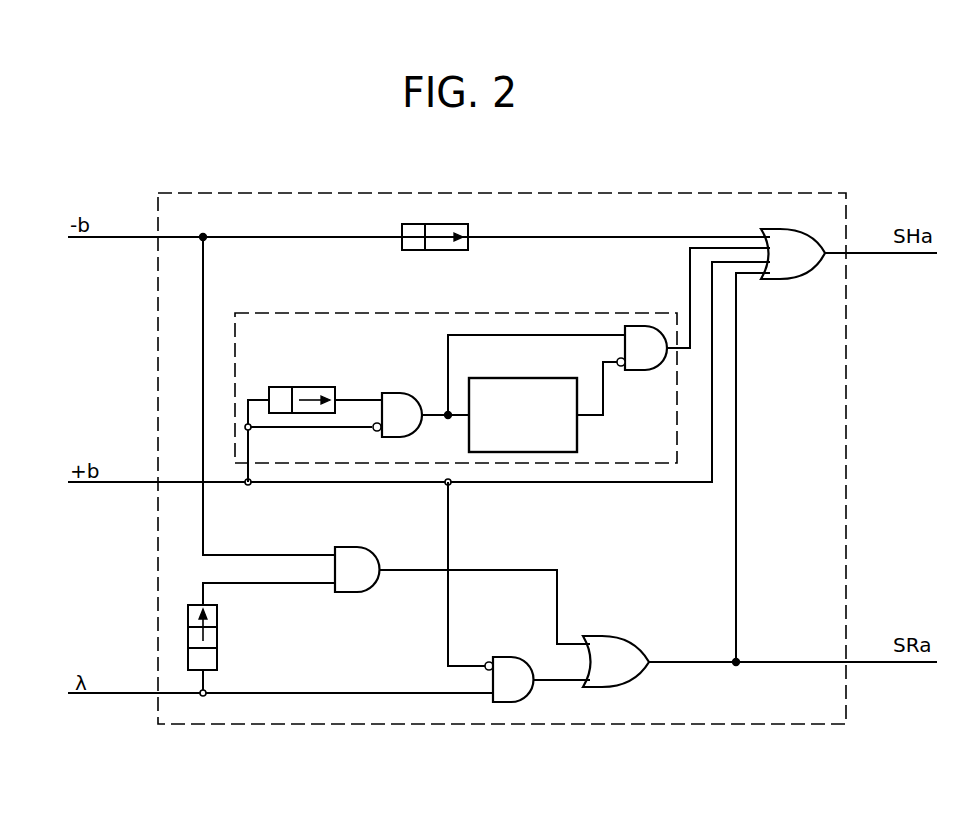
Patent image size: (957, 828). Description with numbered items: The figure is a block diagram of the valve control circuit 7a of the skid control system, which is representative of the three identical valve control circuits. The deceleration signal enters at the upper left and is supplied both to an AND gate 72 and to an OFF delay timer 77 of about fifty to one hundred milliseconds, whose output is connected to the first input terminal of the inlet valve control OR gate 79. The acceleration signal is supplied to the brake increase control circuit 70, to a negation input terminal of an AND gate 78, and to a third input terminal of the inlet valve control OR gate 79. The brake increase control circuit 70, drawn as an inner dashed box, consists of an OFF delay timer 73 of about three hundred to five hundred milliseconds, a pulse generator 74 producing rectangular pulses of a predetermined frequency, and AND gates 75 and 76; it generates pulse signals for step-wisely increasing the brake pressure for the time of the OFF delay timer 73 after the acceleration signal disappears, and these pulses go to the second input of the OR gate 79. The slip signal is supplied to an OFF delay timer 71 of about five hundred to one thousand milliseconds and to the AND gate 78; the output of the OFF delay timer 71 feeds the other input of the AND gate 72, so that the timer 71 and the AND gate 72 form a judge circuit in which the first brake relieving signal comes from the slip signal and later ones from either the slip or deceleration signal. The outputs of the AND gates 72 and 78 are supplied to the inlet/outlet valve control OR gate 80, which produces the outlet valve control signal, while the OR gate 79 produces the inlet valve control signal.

The valve control circuit 7a is at (445, 193).
The brake increase control circuit 70 is at (292, 313).
The OFF delay timer 71 is at (217, 637).
The AND gate 72 is at (352, 547).
The OFF delay timer 73 is at (306, 387).
The pulse generator 74 is at (520, 381).
The AND gate 75 is at (405, 393).
The AND gate 76 is at (646, 371).
The OFF delay timer 77 is at (440, 250).
The AND gate 78 is at (512, 657).
The inlet valve control OR gate 79 is at (788, 280).
The inlet/outlet valve control OR gate 80 is at (612, 642).